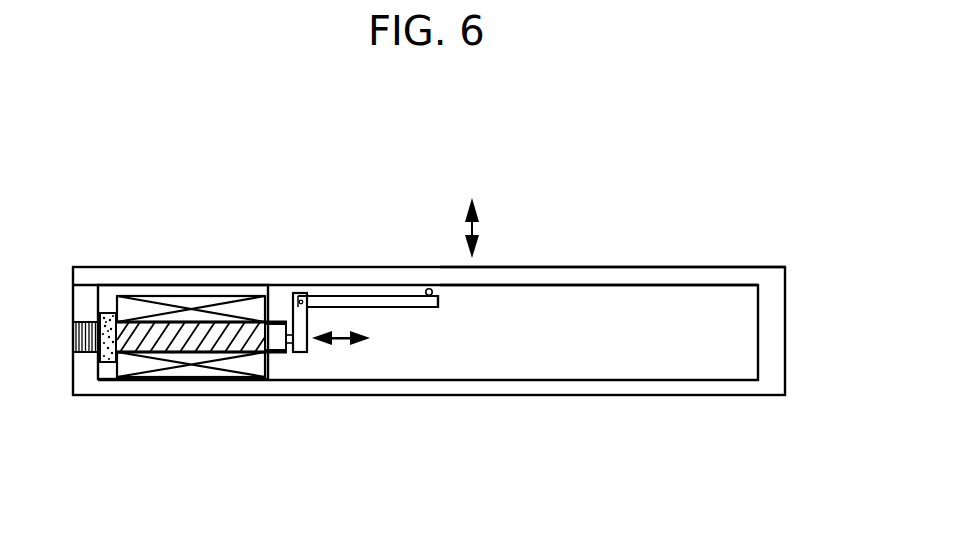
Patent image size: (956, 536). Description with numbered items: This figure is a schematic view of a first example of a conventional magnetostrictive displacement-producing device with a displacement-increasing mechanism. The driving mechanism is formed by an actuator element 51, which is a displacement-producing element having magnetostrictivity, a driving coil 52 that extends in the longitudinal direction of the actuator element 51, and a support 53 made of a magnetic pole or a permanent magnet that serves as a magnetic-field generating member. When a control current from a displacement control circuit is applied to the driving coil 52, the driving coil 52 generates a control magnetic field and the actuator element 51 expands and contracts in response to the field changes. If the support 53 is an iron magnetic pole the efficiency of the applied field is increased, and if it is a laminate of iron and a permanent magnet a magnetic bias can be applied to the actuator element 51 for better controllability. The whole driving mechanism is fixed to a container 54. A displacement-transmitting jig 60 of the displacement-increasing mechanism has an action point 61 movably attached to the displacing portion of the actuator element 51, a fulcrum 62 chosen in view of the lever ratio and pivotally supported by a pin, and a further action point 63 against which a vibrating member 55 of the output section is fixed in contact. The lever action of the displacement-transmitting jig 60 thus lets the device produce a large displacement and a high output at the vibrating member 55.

The actuator element 51 is at (127, 290).
The driving coil 52 is at (207, 297).
The support 53 is at (110, 355).
The container 54 is at (645, 397).
The vibrating member 55 is at (548, 278).
The displacement-transmitting jig 60 is at (407, 300).
The action point 61 is at (287, 357).
The fulcrum 62 is at (317, 295).
The action point 63 is at (430, 289).